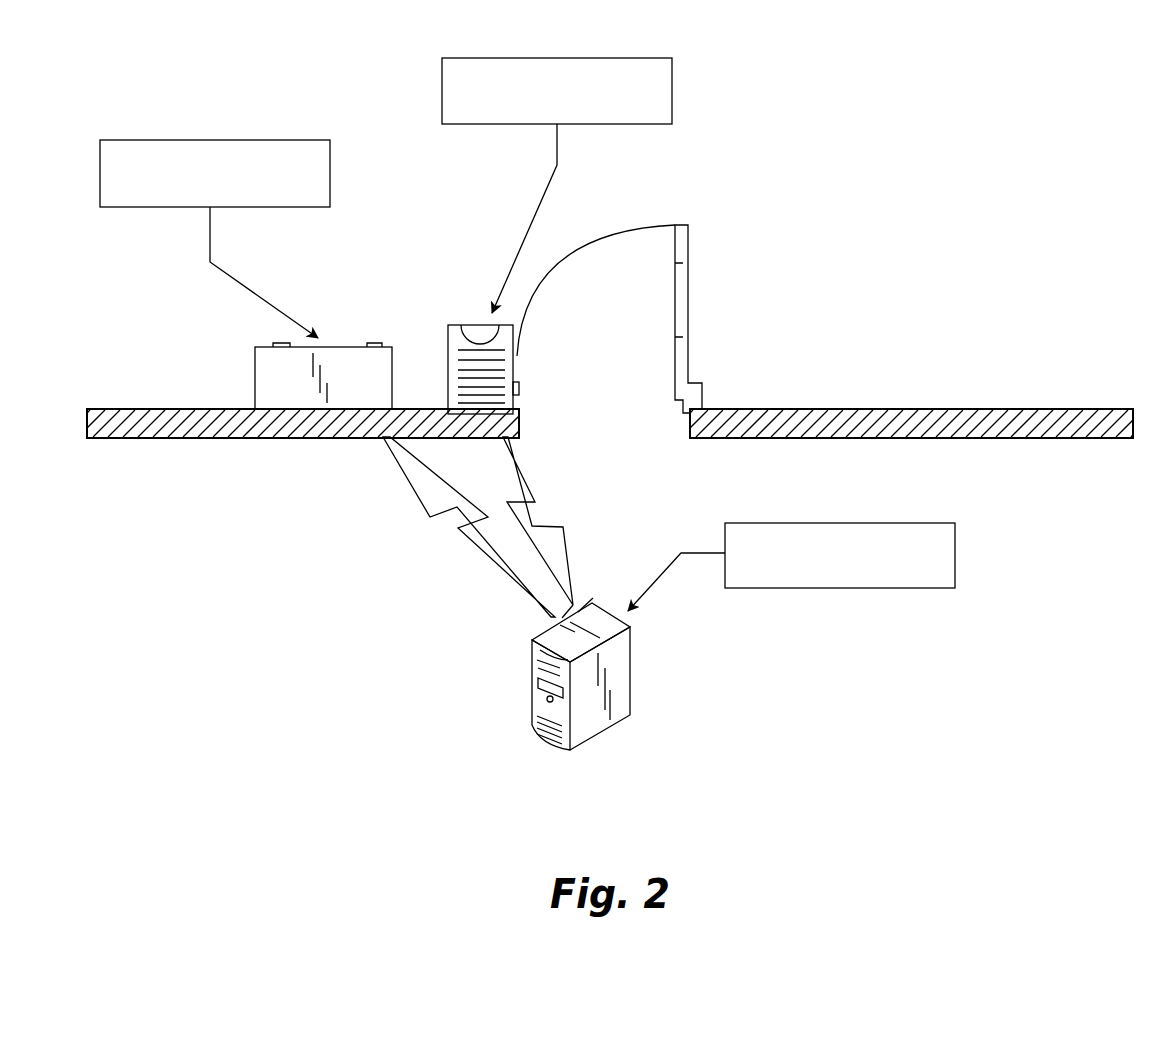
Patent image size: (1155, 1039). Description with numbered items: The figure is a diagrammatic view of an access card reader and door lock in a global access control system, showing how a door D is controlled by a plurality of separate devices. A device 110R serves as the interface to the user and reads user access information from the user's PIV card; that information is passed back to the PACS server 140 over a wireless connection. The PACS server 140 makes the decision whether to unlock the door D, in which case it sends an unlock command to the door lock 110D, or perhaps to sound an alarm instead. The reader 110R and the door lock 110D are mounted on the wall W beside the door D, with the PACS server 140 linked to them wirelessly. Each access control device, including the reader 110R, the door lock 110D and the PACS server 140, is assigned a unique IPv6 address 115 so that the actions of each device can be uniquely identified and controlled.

The unique IPv6 address 115 is at (120, 140).
The device 110R is at (256, 360).
The door lock 110D is at (448, 337).
The door D is at (688, 288).
The wall W is at (134, 438).
The PACS server 140 is at (631, 680).